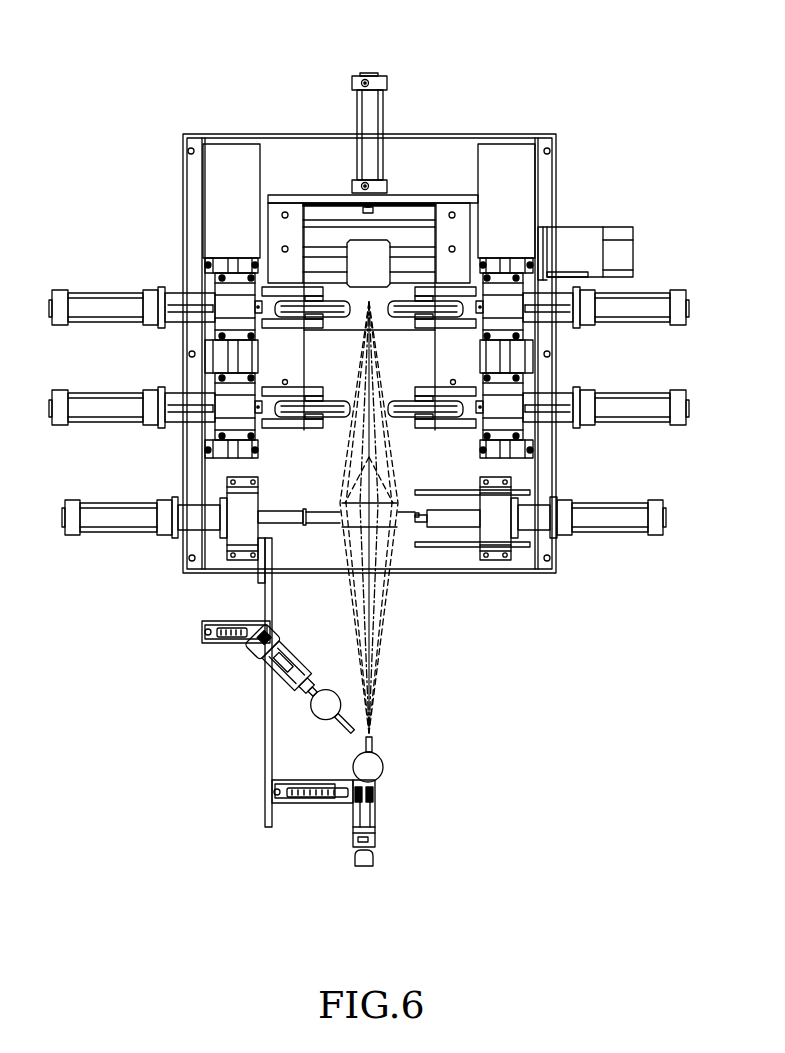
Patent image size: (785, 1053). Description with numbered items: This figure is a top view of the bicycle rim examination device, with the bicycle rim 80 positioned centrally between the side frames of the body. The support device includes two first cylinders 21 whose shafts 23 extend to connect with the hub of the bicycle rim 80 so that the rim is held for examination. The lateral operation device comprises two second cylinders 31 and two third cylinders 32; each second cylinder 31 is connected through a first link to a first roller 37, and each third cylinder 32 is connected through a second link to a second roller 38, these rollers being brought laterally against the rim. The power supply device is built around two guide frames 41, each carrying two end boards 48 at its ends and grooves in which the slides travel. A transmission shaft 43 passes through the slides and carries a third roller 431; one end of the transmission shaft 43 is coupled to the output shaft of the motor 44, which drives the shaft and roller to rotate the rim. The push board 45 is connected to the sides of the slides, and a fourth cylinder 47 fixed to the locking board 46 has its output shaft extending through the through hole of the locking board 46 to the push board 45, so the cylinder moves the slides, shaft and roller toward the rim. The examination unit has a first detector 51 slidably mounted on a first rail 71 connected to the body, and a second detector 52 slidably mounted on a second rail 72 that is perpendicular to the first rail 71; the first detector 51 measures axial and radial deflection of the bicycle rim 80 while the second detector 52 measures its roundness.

The first cylinder 21 is at (612, 522).
The shaft 23 is at (443, 522).
The second cylinder 31 is at (623, 410).
The third cylinder 32 is at (623, 310).
The first roller 37 is at (393, 411).
The second roller 38 is at (393, 310).
The guide frame 41 is at (277, 221).
The transmission shaft 43 is at (327, 257).
The third roller 431 is at (318, 220).
The motor 44 is at (578, 238).
The push board 45 is at (362, 250).
The locking board 46 is at (417, 198).
The fourth cylinder 47 is at (373, 115).
The end board 48 is at (287, 436).
The first detector 51 is at (325, 707).
The second detector 52 is at (378, 767).
The first rail 71 is at (265, 755).
The second rail 72 is at (313, 802).
The bicycle rim 80 is at (385, 642).